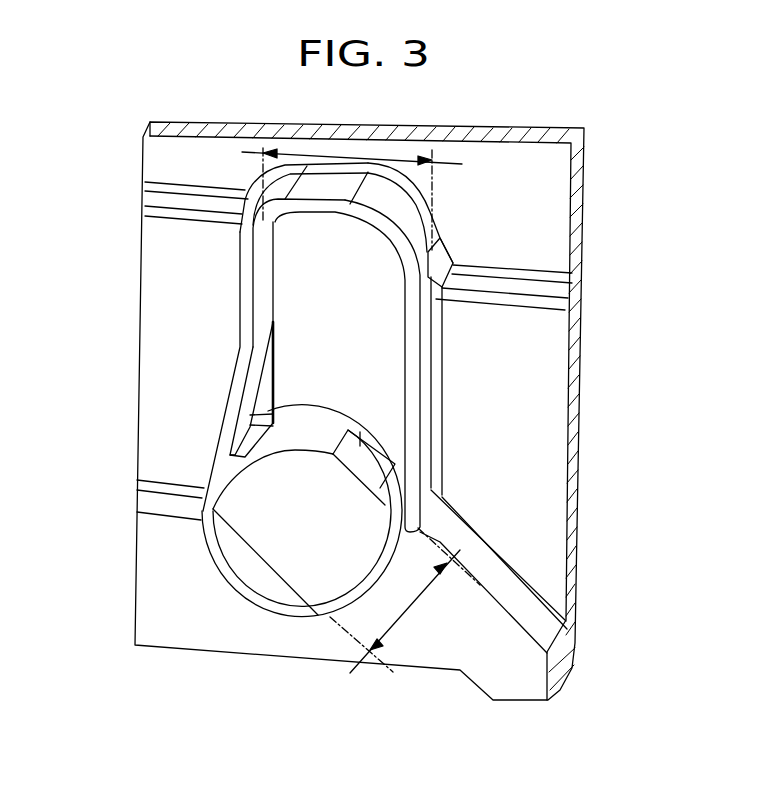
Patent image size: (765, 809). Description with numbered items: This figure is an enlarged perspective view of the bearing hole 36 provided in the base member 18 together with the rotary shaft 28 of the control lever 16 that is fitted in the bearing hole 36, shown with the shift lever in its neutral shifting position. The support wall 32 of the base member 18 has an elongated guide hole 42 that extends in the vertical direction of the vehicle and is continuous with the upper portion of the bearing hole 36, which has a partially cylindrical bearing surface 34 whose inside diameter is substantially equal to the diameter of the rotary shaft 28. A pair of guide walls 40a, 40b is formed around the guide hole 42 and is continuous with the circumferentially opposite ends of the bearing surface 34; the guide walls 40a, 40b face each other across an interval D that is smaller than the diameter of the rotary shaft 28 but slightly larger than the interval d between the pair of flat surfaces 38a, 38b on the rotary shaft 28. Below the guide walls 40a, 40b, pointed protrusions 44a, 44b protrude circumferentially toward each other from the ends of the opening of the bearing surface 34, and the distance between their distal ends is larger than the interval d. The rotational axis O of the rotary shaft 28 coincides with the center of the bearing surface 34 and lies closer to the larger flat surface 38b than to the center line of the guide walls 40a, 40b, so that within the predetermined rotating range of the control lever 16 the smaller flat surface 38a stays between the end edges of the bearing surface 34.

The control lever 16 is at (341, 347).
The base member 18 is at (323, 390).
The rotary shaft 28 is at (234, 545).
The support wall 32 is at (538, 133).
The bearing surface 34 is at (257, 594).
The bearing hole 36 is at (259, 626).
The flat surface 38a is at (368, 421).
The flat surface 38b is at (293, 588).
The guide wall 40a is at (396, 386).
The guide wall 40b is at (266, 272).
The guide hole 42 is at (450, 227).
The pointed protrusion 44a is at (425, 500).
The pointed protrusion 44b is at (228, 462).
The rotational axis O is at (300, 528).
The interval D is at (352, 191).
The interval d is at (405, 600).